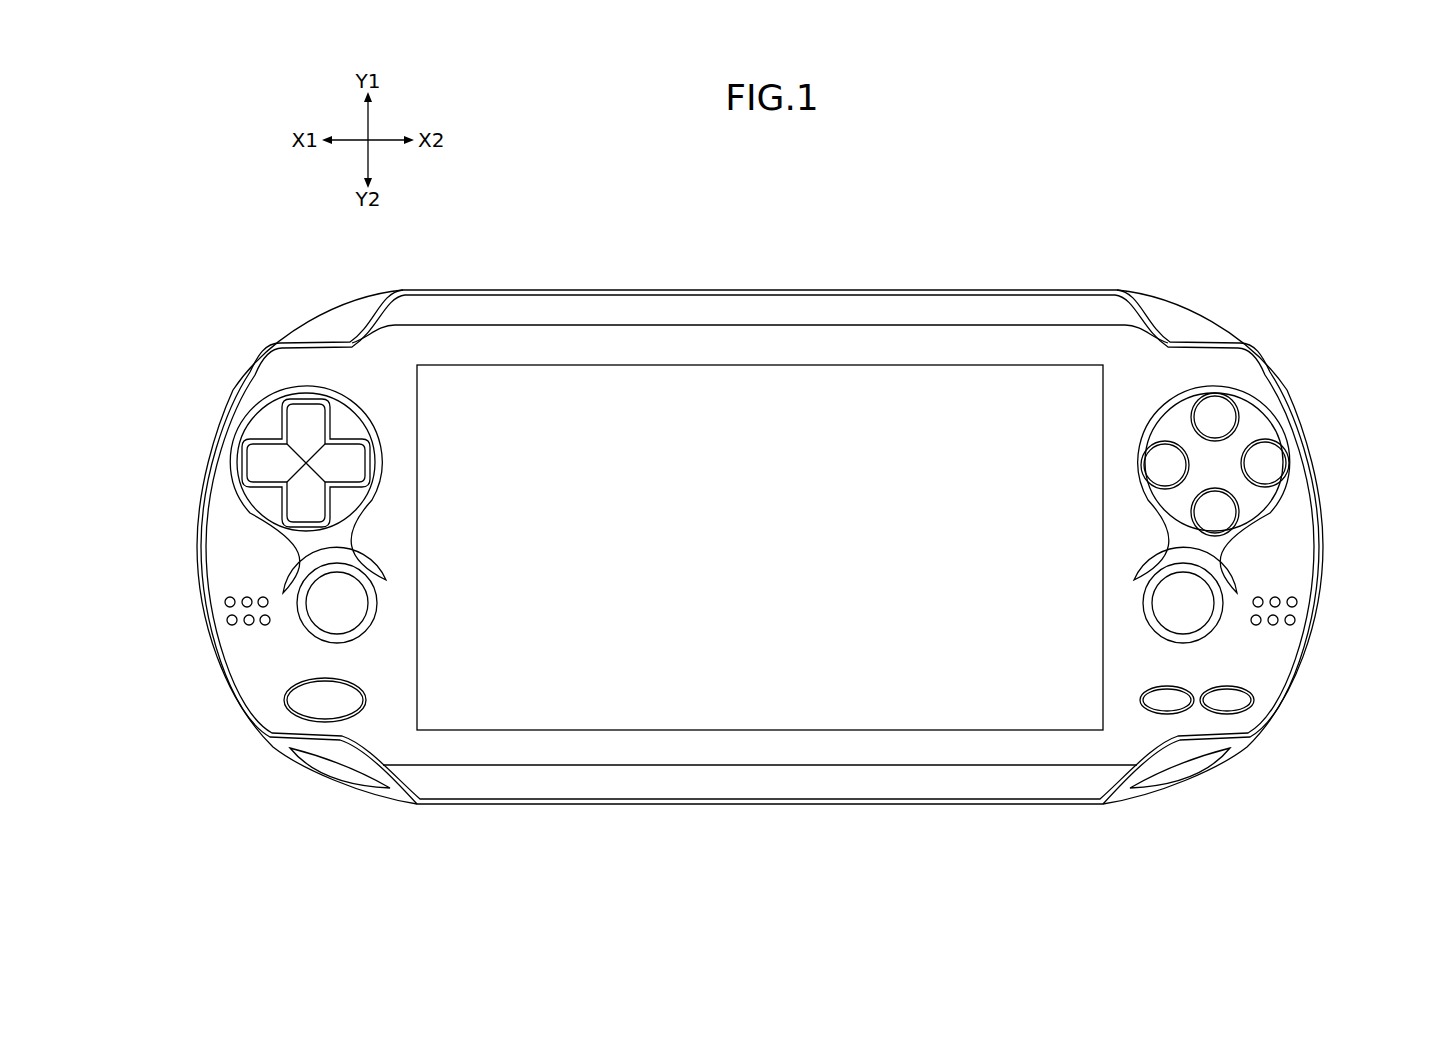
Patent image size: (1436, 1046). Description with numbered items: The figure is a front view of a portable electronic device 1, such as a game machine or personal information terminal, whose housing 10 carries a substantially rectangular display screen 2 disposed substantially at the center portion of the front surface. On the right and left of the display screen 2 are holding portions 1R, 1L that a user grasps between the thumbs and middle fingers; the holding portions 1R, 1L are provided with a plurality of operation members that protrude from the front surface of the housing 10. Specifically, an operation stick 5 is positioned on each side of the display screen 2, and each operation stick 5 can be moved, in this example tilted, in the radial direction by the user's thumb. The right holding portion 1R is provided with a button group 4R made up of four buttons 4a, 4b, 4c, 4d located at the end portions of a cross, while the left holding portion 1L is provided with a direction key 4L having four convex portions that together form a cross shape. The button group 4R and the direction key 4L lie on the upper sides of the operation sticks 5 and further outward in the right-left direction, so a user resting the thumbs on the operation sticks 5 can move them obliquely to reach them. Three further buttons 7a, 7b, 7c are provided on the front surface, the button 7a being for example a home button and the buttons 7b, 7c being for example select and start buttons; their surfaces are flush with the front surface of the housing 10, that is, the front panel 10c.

The electronic device 1 is at (790, 208).
The holding portion 1L is at (233, 553).
The holding portion 1R is at (1298, 541).
The display screen 2 is at (640, 365).
The housing 10 is at (990, 282).
The front panel 10c is at (1078, 338).
The direction key 4L is at (343, 424).
The button group 4R is at (1282, 486).
The button 4a is at (1282, 511).
The button 4b is at (1270, 462).
The button 4c is at (1177, 473).
The button 4d is at (1222, 418).
The operation stick 5 is at (323, 612).
The button 7a is at (317, 702).
The button 7b is at (1168, 703).
The button 7c is at (1227, 703).